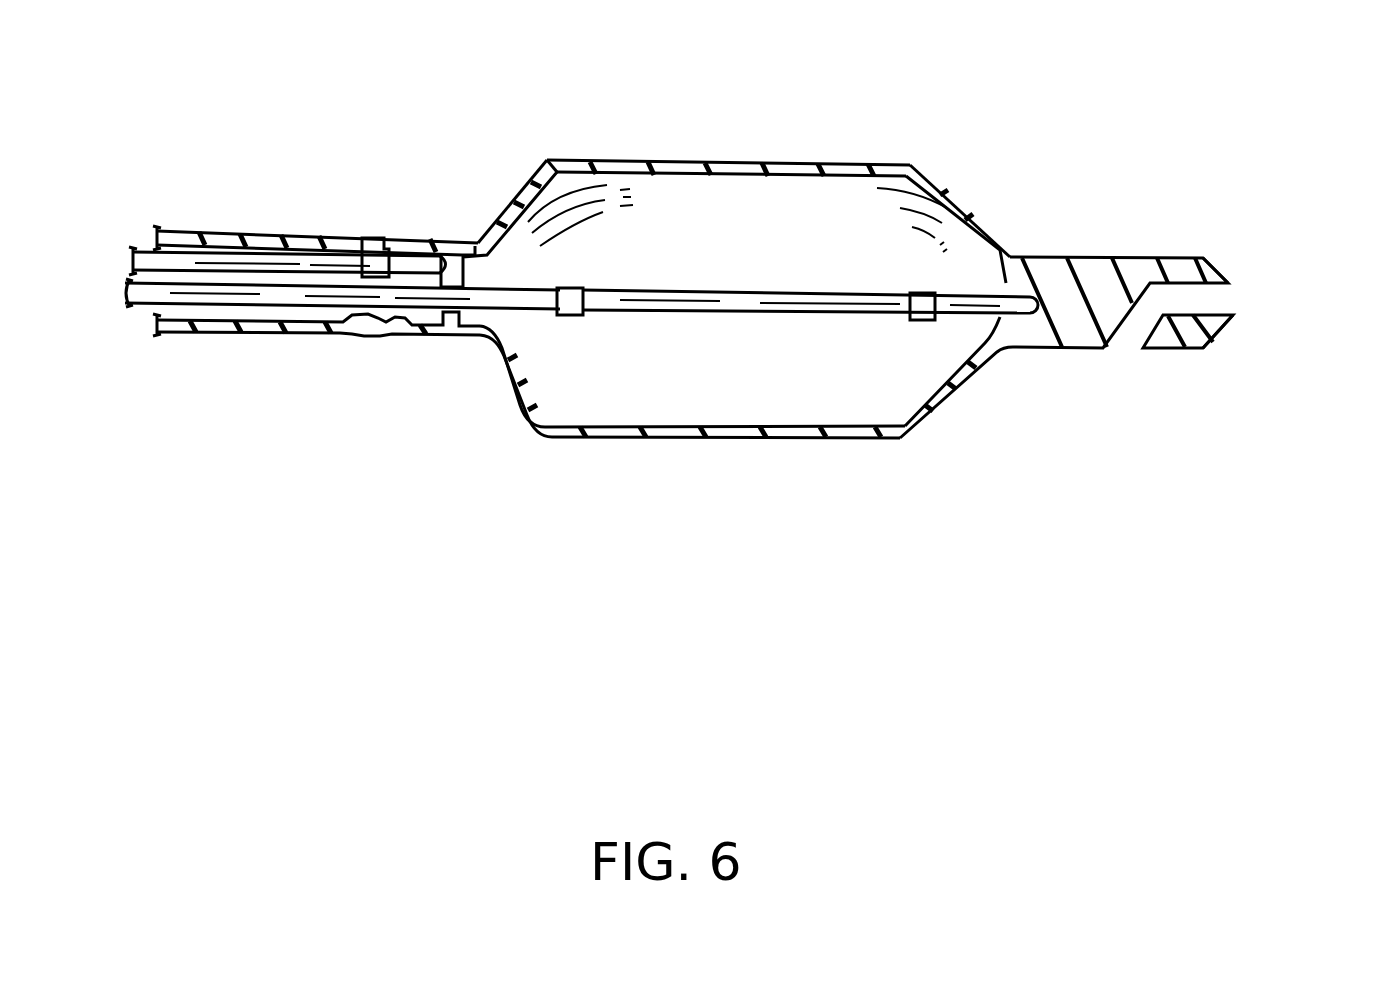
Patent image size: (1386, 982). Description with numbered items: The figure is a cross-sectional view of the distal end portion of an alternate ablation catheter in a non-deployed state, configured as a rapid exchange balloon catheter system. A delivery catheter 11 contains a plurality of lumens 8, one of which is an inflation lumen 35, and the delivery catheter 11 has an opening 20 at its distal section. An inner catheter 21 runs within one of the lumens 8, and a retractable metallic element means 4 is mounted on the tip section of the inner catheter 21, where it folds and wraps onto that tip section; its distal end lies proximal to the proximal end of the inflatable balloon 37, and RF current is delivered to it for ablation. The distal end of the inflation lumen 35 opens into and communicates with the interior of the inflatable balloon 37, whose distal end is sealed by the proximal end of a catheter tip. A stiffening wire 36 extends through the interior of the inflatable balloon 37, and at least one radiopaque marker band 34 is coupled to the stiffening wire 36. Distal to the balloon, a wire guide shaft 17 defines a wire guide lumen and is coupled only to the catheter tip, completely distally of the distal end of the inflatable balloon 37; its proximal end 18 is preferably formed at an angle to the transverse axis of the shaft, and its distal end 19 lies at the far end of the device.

The retractable metallic element means 4 is at (387, 238).
The lumens 8 is at (208, 278).
The delivery catheter 11 is at (188, 232).
The wire guide shaft 17 is at (1148, 315).
The proximal end of wire guide shaft 18 is at (1117, 363).
The distal end of wire guide shaft 19 is at (1240, 297).
The opening 20 is at (400, 232).
The inner catheter 21 is at (290, 237).
The radiopaque marker band 34 is at (558, 320).
The inflation lumen 35 is at (597, 397).
The stiffening wire 36 is at (717, 313).
The inflatable balloon 37 is at (810, 157).